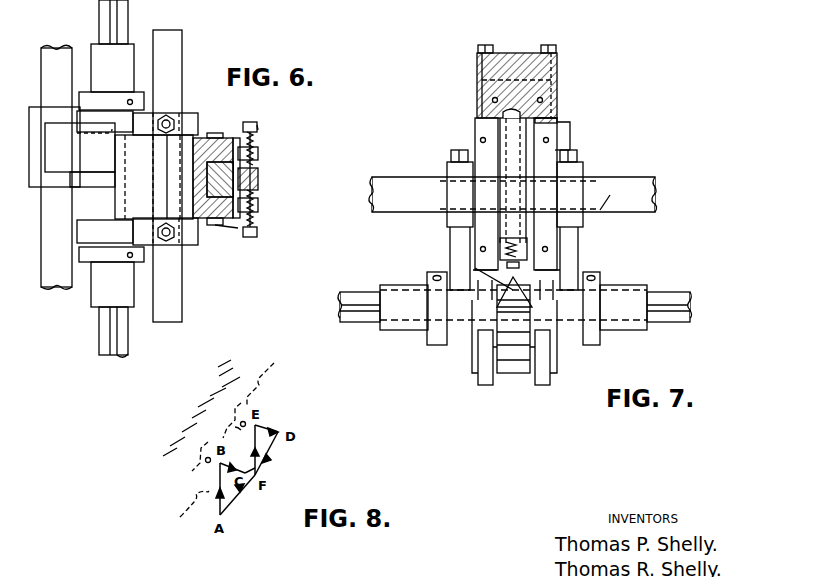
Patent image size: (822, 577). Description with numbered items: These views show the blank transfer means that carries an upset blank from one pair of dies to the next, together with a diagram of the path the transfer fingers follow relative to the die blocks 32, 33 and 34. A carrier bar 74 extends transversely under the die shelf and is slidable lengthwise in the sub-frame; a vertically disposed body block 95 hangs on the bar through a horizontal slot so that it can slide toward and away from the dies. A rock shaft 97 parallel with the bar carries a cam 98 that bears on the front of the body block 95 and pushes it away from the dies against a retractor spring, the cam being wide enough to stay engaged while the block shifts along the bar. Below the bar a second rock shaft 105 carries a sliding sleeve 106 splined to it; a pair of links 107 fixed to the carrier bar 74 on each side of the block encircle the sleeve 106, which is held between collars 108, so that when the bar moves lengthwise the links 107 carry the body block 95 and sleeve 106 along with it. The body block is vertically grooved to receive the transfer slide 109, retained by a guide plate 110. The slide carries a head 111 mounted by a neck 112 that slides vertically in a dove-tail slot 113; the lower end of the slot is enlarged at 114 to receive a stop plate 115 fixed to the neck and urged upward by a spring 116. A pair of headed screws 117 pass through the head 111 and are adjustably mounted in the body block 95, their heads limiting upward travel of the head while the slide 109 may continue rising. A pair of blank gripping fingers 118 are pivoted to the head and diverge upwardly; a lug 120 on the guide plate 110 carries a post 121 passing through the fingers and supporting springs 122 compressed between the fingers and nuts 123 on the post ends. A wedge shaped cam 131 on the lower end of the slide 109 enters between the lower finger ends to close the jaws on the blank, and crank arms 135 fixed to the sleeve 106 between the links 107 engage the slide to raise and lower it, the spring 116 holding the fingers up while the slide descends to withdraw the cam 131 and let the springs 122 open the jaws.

In FIG. 8, the die block 32 is at (194, 479).
In FIG. 8, the die block 33 is at (226, 433).
In FIG. 8, the die block 34 is at (221, 408).
In FIG. 6, the carrier bar 74 is at (167, 176).
In FIG. 7, the carrier bar 74 is at (513, 194).
In FIG. 6, the body block 95 is at (154, 177).
In FIG. 7, the body block 95 is at (616, 237).
In FIG. 6, the rock shaft 97 is at (56, 167).
In FIG. 6, the cam 98 is at (72, 147).
In FIG. 6, the second rock shaft 105 is at (97, 333).
In FIG. 7, the second rock shaft 105 is at (665, 291).
In FIG. 6, the sliding sleeve 106 is at (112, 153).
In FIG. 7, the sliding sleeve 106 is at (513, 307).
In FIG. 6, the links 107 is at (199, 120).
In FIG. 7, the links 107 is at (515, 220).
In FIG. 6, the collars 108 is at (111, 177).
In FIG. 7, the collars 108 is at (433, 345).
In FIG. 6, the transfer slide 109 is at (225, 225).
In FIG. 7, the transfer slide 109 is at (481, 140).
In FIG. 6, the guide plate 110 is at (258, 160).
In FIG. 7, the head 111 is at (556, 62).
In FIG. 7, the neck 112 is at (560, 112).
In FIG. 7, the dove-tail slot 113 is at (565, 132).
In FIG. 7, the slot enlargement 114 is at (528, 270).
In FIG. 7, the stop plate 115 is at (483, 275).
In FIG. 7, the spring 116 is at (618, 190).
In FIG. 7, the headed screws 117 is at (478, 47).
In FIG. 6, the blank gripping fingers 118 is at (258, 186).
In FIG. 6, the lug 120 is at (258, 176).
In FIG. 6, the post 121 is at (251, 121).
In FIG. 6, the springs 122 is at (262, 134).
In FIG. 6, the nuts 123 is at (258, 128).
In FIG. 7, the wedge shaped cam 131 is at (503, 262).
In FIG. 6, the crank arms 135 is at (258, 150).
In FIG. 7, the crank arms 135 is at (480, 380).